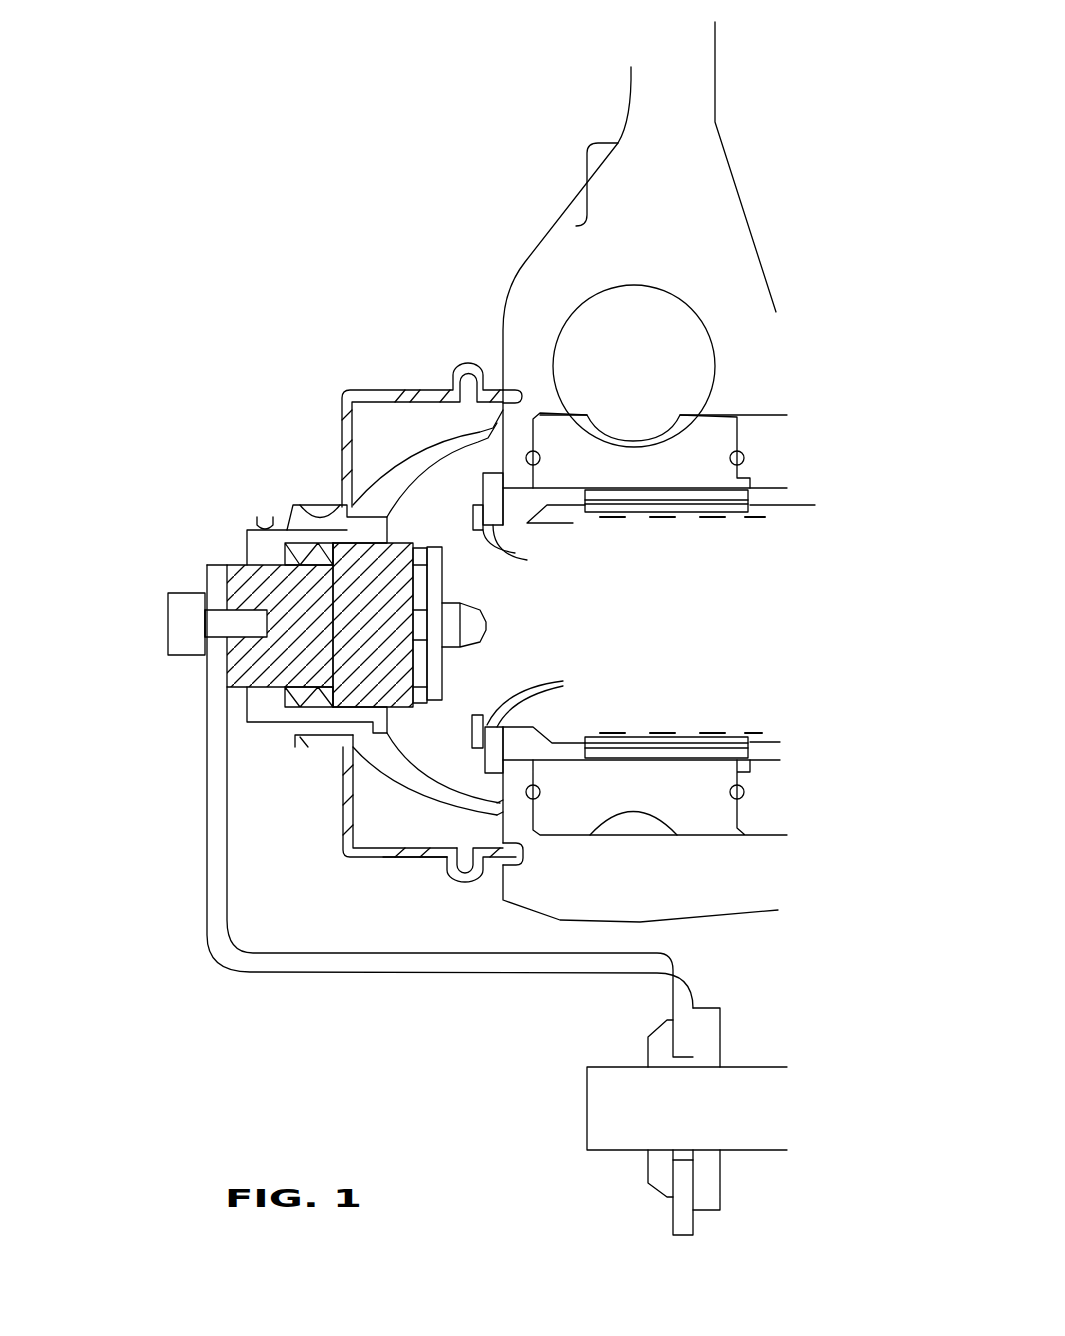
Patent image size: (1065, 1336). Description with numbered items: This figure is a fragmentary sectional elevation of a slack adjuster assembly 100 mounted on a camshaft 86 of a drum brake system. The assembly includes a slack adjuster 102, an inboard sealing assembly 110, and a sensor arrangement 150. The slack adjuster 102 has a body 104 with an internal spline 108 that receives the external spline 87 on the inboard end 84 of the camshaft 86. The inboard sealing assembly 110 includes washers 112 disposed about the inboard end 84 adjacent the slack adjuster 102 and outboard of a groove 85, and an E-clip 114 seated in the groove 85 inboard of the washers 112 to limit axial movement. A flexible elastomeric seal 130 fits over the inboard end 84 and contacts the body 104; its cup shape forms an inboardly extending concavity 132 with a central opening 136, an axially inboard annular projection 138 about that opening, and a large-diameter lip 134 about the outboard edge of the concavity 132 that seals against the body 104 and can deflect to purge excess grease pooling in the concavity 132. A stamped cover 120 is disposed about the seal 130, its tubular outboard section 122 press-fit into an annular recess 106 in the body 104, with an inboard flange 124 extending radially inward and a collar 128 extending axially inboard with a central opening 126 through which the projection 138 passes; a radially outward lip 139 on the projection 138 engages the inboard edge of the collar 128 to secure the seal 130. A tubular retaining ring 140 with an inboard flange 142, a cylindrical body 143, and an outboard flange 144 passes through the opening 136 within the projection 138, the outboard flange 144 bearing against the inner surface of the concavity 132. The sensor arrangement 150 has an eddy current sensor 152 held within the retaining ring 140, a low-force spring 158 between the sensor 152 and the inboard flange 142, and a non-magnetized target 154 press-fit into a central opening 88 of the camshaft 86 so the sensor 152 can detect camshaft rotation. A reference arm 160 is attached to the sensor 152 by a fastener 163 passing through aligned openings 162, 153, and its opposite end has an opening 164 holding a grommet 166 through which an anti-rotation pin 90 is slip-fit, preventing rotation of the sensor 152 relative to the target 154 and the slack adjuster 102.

The slack adjuster assembly 100 is at (288, 232).
The slack adjuster 102 is at (762, 227).
The body 104 is at (515, 276).
The annular recess 106 is at (515, 388).
The internal spline 108 is at (713, 740).
The inboard sealing assembly 110 is at (408, 366).
The washers 112 is at (527, 560).
The E-clip 114 is at (480, 510).
The cover 120 is at (342, 866).
The outboard section 122 is at (417, 860).
The inboard flange 124 is at (343, 810).
The central opening 126 is at (290, 505).
The collar 128 is at (320, 745).
The seal 130 is at (409, 799).
The concavity 132 is at (470, 793).
The lip 134 is at (500, 800).
The central opening 136 is at (275, 532).
The projection 138 is at (351, 533).
The lip 139 is at (300, 742).
The retaining ring 140 is at (234, 549).
The inboard flange 142 is at (247, 700).
The cylindrical body 143 is at (285, 522).
The outboard flange 144 is at (388, 735).
The sensor arrangement 150 is at (342, 398).
The eddy current sensor 152 is at (390, 707).
The opening 153 is at (207, 640).
The target 154 is at (445, 577).
The spring 158 is at (285, 550).
The reference arm 160 is at (208, 966).
The opening 162 is at (207, 617).
The fastener 163 is at (168, 621).
The opening 164 is at (680, 1160).
The grommet 166 is at (720, 1017).
The inboard end 84 is at (520, 517).
The groove 85 is at (457, 521).
The camshaft 86 is at (776, 490).
The external spline 87 is at (563, 748).
The central opening 88 is at (483, 632).
The anti-rotation pin 90 is at (760, 1067).